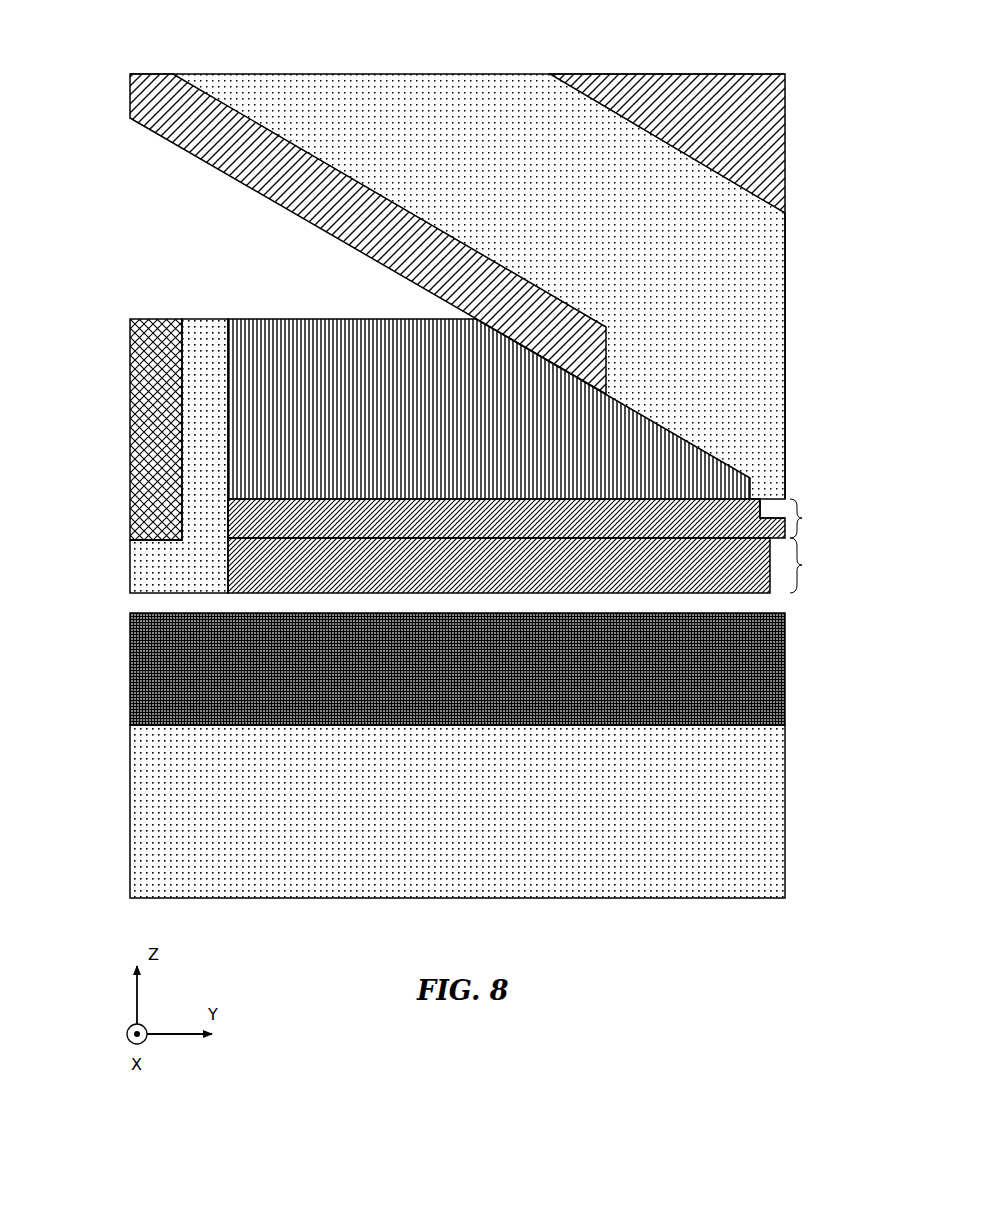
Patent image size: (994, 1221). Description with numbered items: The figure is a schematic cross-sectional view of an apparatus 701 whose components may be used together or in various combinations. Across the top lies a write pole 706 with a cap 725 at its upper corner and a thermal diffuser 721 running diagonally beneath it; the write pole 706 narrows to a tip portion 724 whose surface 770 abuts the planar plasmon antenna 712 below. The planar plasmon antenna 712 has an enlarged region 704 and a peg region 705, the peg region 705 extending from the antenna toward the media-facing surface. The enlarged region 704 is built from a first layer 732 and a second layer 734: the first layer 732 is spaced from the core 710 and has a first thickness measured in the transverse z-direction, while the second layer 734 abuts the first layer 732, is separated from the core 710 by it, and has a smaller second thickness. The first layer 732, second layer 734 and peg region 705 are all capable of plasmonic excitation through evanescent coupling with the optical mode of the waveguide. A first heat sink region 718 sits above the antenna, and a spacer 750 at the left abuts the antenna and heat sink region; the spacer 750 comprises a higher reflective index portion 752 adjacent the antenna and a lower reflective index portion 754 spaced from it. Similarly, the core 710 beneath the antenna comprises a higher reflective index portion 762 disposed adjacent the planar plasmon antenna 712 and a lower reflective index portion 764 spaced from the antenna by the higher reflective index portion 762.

The apparatus 701 is at (140, 40).
The enlarged region 704 is at (225, 528).
The peg region 705 is at (780, 518).
The write pole 706 is at (402, 105).
The core 710 is at (452, 755).
The planar plasmon antenna 712 is at (213, 538).
The first heat sink region 718 is at (330, 325).
The thermal diffuser 721 is at (140, 110).
The tip portion 724 is at (785, 322).
The cap 725 is at (690, 95).
The first layer 732 is at (227, 556).
The second layer 734 is at (150, 510).
The spacer 750 is at (140, 429).
The higher reflective index portion 752 is at (205, 345).
The lower reflective index portion 754 is at (128, 415).
The higher reflective index portion 762 is at (785, 662).
The lower reflective index portion 764 is at (785, 800).
The surface 770 is at (767, 498).